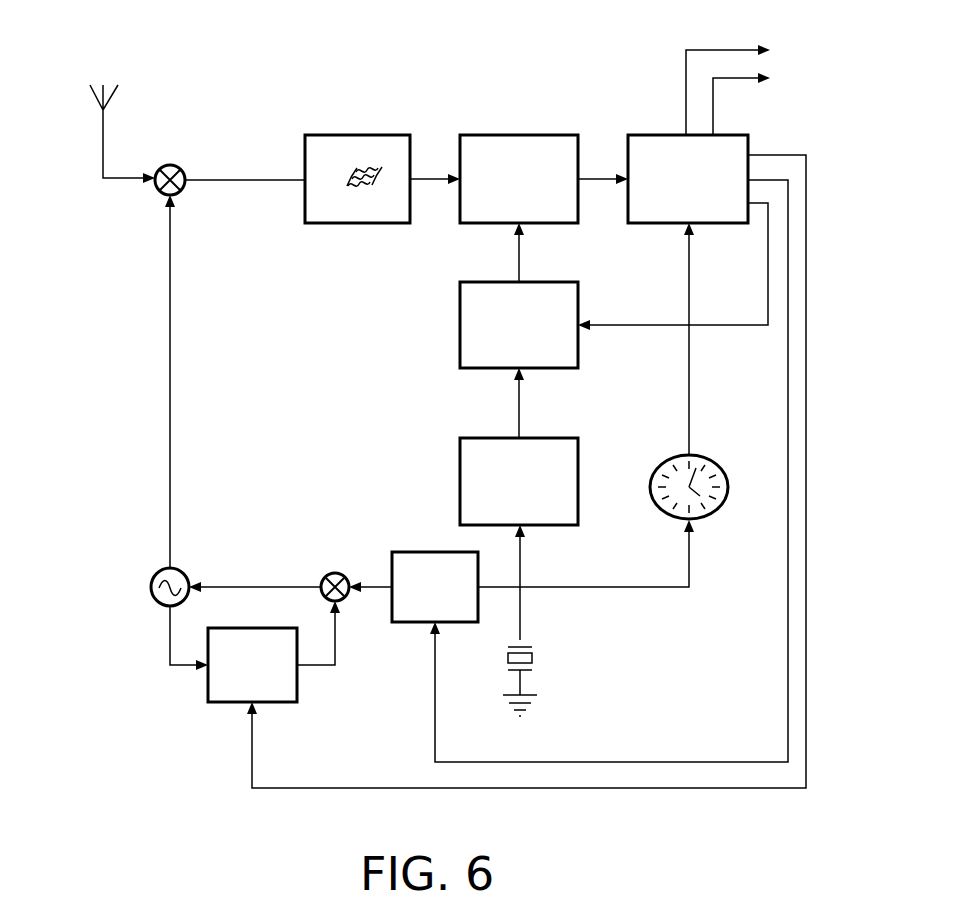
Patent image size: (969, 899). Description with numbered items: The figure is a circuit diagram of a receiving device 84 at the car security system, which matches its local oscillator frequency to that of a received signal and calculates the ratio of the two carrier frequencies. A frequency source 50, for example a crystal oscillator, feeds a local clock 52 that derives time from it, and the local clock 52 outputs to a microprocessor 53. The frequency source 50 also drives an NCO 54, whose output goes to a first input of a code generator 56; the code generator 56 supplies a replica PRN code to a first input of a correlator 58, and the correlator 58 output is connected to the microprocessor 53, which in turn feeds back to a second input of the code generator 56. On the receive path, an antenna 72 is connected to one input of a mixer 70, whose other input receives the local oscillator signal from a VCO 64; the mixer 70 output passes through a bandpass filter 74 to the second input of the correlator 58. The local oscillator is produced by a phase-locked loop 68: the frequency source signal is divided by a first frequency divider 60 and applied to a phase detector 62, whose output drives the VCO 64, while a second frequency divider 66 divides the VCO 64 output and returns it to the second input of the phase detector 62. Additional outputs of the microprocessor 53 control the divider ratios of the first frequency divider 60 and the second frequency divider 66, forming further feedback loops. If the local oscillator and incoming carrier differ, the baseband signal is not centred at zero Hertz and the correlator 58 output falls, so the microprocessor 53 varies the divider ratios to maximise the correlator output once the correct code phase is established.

The receiving device 84 is at (176, 62).
The antenna 72 is at (103, 133).
The mixer 70 is at (171, 165).
The bandpass filter 74 is at (358, 135).
The correlator 58 is at (518, 135).
The microprocessor 53 is at (652, 135).
The code generator 56 is at (460, 325).
The NCO (Numerically Controlled Oscillator) 54 is at (460, 470).
The local clock 52 is at (718, 512).
The first frequency divider 60 is at (423, 552).
The phase detector 62 is at (335, 572).
The VCO (Voltage Controlled Oscillator) 64 is at (151, 587).
The phase-locked loop (PLL) 68 is at (153, 644).
The second frequency divider 66 is at (227, 703).
The frequency source 50 is at (533, 658).